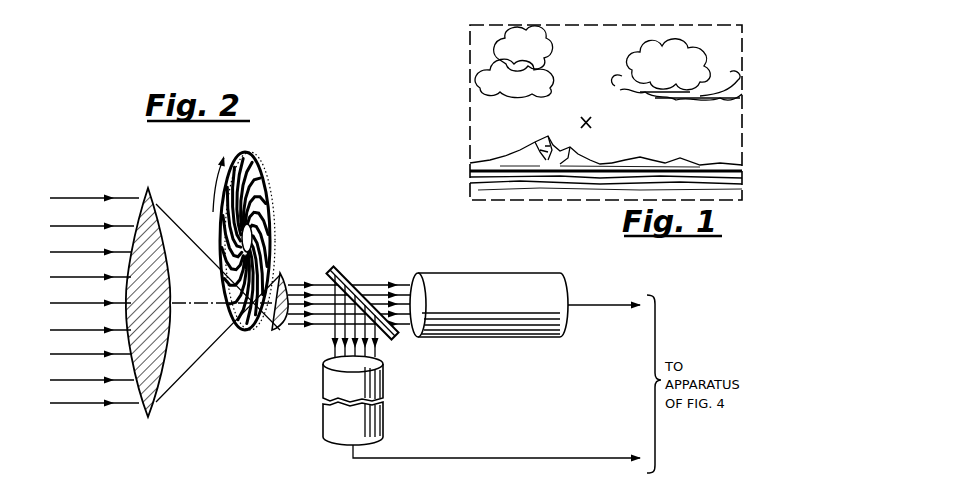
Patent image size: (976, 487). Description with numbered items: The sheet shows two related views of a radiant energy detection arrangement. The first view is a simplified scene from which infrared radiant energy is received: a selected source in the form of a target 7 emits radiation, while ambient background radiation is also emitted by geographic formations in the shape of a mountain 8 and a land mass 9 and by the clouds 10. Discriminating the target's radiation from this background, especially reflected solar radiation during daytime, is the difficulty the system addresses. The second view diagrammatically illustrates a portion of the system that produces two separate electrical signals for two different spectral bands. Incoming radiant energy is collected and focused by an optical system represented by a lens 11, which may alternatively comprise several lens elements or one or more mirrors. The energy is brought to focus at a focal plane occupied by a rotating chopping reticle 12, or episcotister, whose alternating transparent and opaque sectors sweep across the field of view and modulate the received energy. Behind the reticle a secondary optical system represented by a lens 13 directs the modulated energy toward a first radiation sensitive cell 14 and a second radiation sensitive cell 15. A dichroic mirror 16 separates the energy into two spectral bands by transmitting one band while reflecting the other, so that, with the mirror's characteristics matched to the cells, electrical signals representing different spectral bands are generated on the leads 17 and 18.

In FIG. 1, the target 7 is at (591, 126).
In FIG. 1, the mountain 8 is at (545, 137).
In FIG. 1, the land mass 9 is at (680, 166).
In FIG. 1, the clouds 10 is at (608, 73).
In FIG. 2, the lens 11 is at (152, 197).
In FIG. 2, the rotating chopping reticle 12 is at (258, 162).
In FIG. 2, the lens 13 is at (279, 333).
In FIG. 2, the first radiation sensitive cell 14 is at (536, 275).
In FIG. 2, the second radiation sensitive cell 15 is at (385, 381).
In FIG. 2, the dichroic mirror 16 is at (342, 252).
In FIG. 2, the lead 17 is at (580, 305).
In FIG. 2, the lead 18 is at (542, 458).